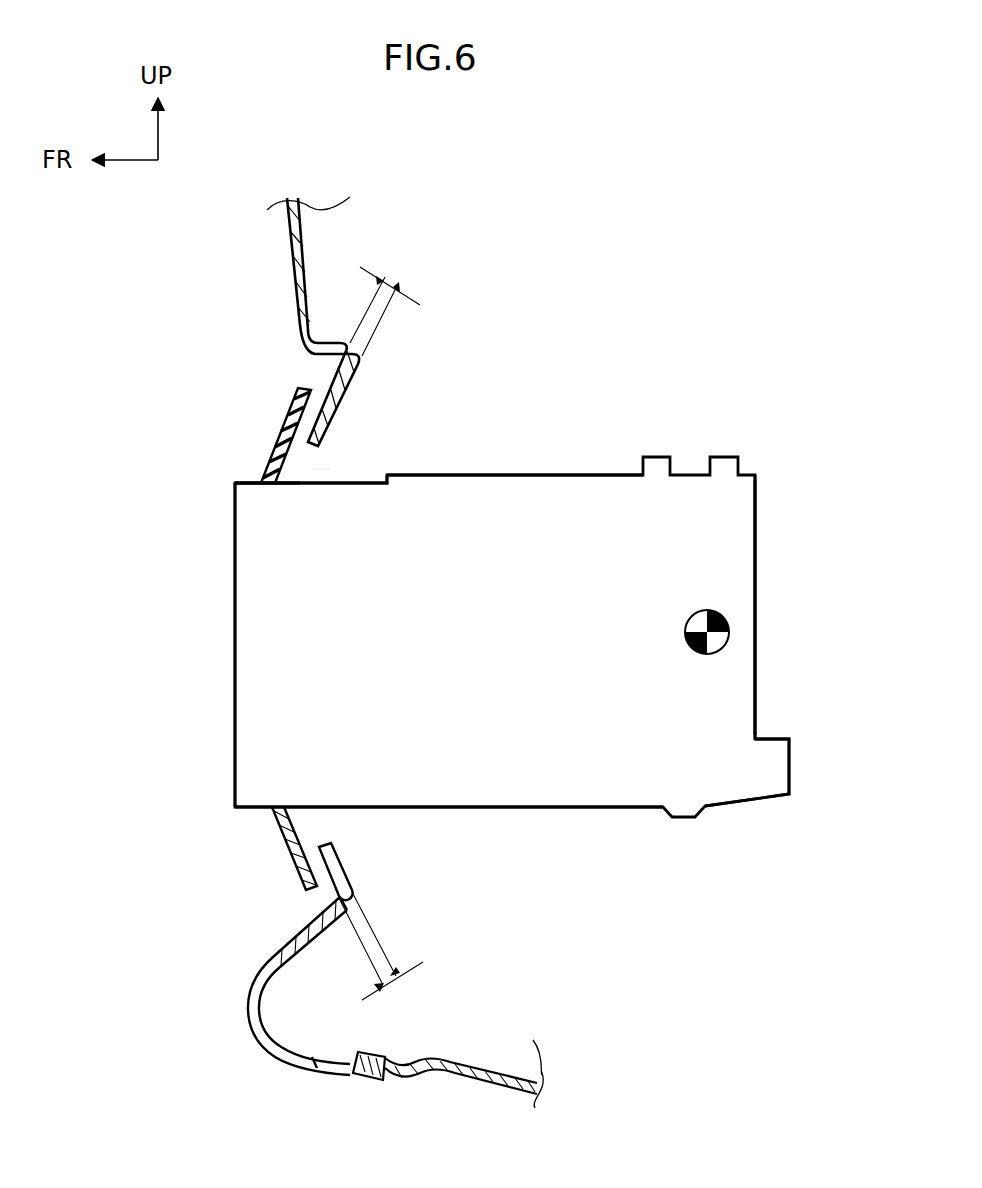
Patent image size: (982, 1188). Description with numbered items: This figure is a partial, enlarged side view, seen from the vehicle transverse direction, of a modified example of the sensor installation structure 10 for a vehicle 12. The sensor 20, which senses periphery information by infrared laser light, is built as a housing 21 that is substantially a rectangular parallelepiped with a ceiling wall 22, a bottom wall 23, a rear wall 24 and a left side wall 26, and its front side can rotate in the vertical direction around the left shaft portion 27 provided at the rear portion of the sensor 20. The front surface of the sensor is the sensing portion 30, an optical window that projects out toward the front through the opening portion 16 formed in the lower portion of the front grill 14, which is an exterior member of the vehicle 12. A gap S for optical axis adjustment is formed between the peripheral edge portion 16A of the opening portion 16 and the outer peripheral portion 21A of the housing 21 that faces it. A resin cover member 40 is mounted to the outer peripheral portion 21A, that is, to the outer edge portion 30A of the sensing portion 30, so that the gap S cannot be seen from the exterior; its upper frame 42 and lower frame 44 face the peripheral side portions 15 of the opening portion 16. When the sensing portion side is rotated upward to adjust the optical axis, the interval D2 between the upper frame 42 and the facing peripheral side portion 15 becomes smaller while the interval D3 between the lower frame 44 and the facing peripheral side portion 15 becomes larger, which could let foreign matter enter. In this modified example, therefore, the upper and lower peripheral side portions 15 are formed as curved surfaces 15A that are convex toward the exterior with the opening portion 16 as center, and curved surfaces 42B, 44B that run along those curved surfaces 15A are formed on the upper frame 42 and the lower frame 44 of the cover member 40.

The sensor installation structure 10 is at (200, 792).
The vehicle 12 is at (283, 273).
The front grill 14 is at (289, 305).
The peripheral side portions 15 is at (341, 863).
The curved surfaces 15A is at (305, 428).
The opening portion 16 is at (334, 842).
The peripheral edge portion 16A is at (336, 444).
The sensor 20 is at (784, 492).
The housing 21 is at (760, 468).
The outer peripheral portion 21A is at (362, 482).
The ceiling wall 22 is at (560, 473).
The bottom wall 23 is at (580, 808).
The rear wall 24 is at (757, 546).
The left side wall 26 is at (722, 685).
The left shaft portion 27 is at (707, 632).
The sensing portion 30 is at (234, 715).
The outer edge portion 30A is at (245, 482).
The cover member 40 is at (271, 824).
The upper frame 42 is at (282, 428).
The curved surface 42B is at (268, 450).
The lower frame 44 is at (310, 890).
The curved surface 44B is at (290, 857).
The gap S is at (314, 469).
The interval D2 is at (393, 288).
The interval D3 is at (397, 975).